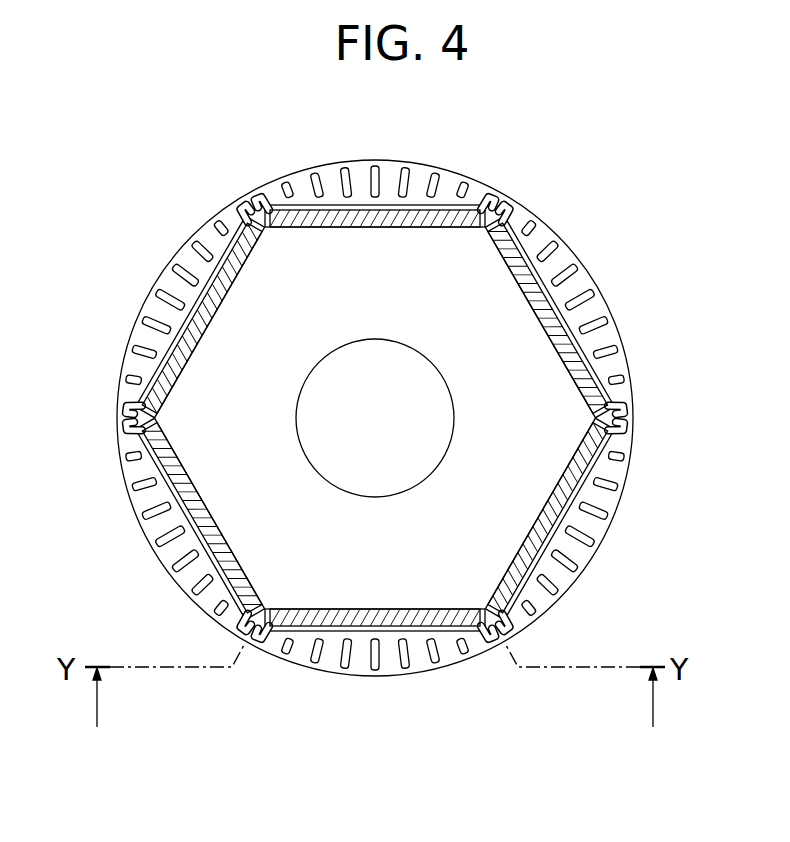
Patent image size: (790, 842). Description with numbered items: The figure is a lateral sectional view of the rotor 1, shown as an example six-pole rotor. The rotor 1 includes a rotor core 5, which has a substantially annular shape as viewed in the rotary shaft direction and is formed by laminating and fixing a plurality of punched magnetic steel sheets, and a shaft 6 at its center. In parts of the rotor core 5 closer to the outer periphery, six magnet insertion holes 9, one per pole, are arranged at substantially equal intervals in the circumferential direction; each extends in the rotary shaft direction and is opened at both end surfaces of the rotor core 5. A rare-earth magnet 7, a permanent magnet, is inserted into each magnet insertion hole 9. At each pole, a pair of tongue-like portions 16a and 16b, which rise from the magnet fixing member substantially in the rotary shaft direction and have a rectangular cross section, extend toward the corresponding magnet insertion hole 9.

The rotor 1 is at (497, 177).
The rotor core 5 is at (478, 290).
The shaft 6 is at (425, 400).
The rare-earth magnet 7 is at (386, 625).
The magnet insertion hole 9 is at (503, 652).
The tongue-like portion 16a is at (266, 645).
The tongue-like portion 16b is at (484, 645).